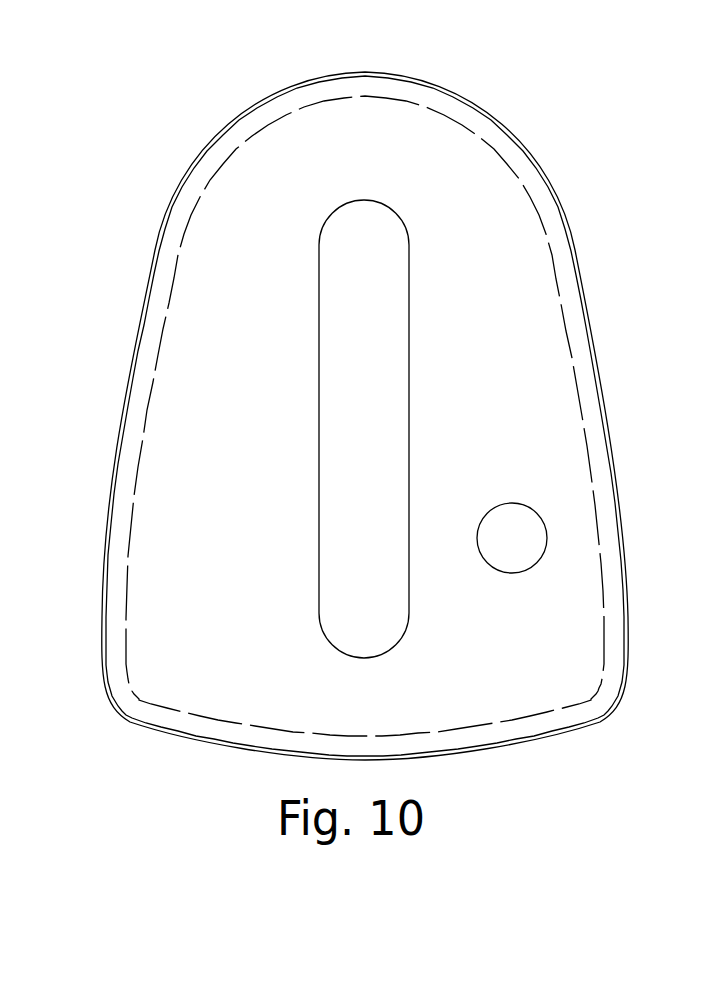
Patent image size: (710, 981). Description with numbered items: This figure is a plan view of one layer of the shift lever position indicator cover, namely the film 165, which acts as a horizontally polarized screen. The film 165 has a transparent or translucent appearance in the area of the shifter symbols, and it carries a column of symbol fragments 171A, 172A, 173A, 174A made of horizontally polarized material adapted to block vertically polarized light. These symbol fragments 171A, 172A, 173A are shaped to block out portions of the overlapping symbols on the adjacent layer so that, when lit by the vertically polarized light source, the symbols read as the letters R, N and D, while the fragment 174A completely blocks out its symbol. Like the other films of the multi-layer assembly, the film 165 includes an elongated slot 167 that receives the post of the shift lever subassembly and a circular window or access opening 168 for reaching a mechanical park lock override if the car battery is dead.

The film 165 is at (483, 113).
The slot 167 is at (385, 608).
The circular window or access opening 168 is at (521, 508).
The symbol fragment 171A is at (227, 367).
The symbol fragment 172A is at (223, 417).
The symbol fragment 173A is at (225, 478).
The symbol fragment 174A is at (227, 528).